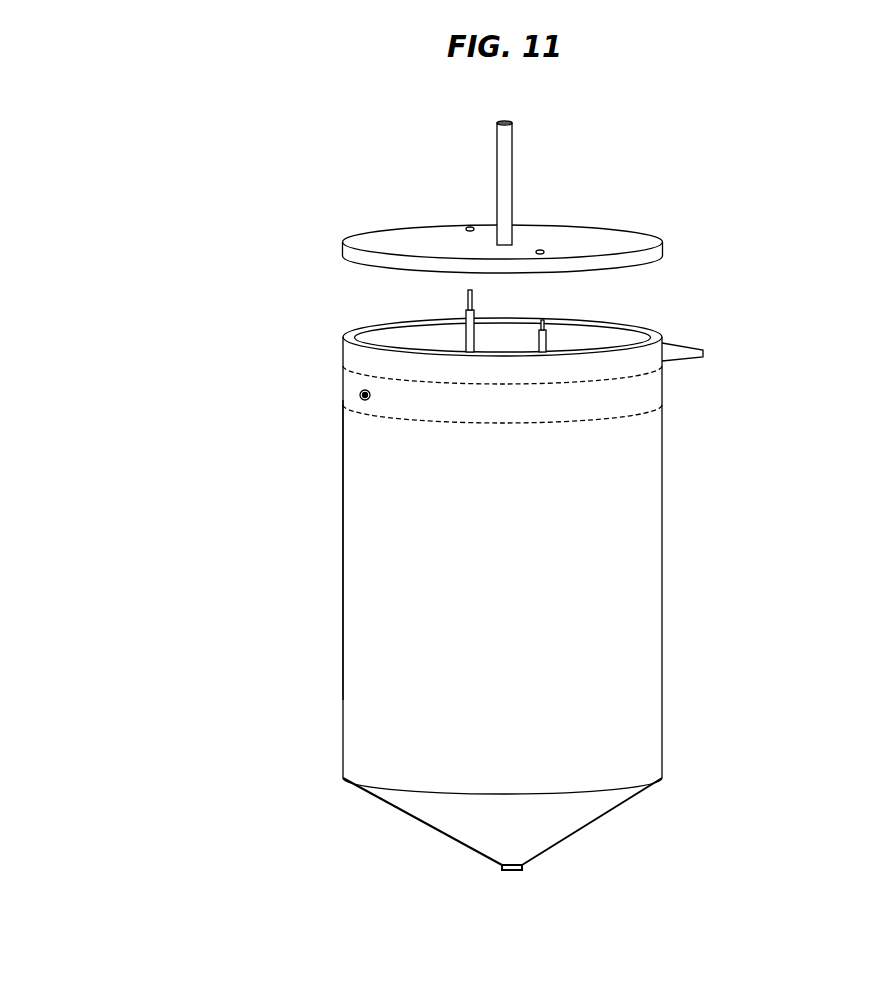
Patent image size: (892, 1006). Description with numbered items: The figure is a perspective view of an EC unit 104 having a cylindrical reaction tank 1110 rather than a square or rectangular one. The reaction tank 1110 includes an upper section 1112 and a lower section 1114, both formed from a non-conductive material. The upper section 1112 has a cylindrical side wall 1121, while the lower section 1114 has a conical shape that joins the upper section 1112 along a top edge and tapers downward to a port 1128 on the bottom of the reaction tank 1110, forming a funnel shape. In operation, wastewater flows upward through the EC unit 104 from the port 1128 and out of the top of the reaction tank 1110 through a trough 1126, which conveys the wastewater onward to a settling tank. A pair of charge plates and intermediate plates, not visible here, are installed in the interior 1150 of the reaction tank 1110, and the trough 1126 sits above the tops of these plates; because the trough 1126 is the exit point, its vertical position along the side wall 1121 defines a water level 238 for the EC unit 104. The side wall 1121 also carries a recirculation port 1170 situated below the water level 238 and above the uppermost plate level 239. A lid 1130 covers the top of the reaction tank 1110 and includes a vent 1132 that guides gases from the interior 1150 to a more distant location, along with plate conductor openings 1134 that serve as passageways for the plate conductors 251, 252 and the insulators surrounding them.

The EC unit 104 is at (127, 339).
The lid 1130 is at (640, 232).
The vent 1132 is at (512, 163).
The plate conductor openings 1134 is at (470, 226).
The reaction tank 1110 is at (662, 560).
The upper section 1112 is at (288, 325).
The cylindrical side wall 1121 is at (390, 597).
The water level 238 is at (525, 384).
The uppermost plate level 239 is at (533, 423).
The interior 1150 is at (427, 344).
The plate conductor 251 is at (466, 301).
The plate conductor 252 is at (546, 322).
The trough 1126 is at (672, 343).
The recirculation port 1170 is at (361, 393).
The lower section 1114 is at (673, 783).
The port 1128 is at (496, 871).